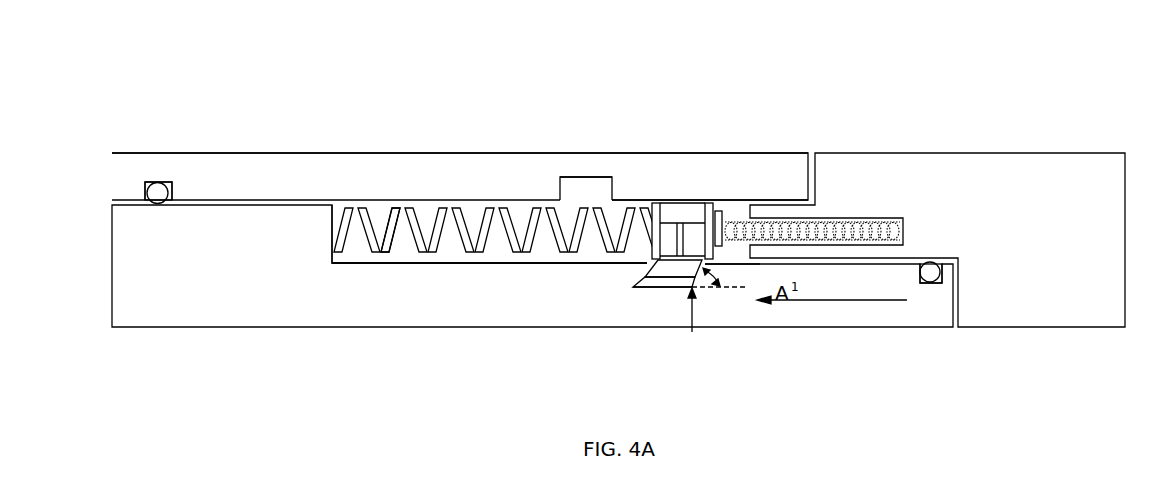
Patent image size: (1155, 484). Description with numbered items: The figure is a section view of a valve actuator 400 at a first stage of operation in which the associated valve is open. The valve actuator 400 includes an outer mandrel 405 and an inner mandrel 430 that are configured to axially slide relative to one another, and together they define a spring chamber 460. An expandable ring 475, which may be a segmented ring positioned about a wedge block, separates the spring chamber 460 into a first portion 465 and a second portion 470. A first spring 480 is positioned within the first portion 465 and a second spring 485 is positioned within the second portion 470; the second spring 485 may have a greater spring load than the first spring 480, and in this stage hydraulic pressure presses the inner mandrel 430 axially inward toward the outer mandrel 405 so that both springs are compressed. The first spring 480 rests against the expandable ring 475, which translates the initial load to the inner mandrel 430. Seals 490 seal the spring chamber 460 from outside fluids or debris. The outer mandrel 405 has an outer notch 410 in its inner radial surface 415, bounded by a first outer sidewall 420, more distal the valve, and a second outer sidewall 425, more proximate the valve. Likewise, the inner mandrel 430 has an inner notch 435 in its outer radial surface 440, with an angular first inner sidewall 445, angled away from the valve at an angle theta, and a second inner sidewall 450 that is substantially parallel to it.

The valve actuator 400 is at (250, 112).
The outer mandrel 405 is at (460, 176).
The outer notch 410 is at (577, 170).
The inner radial surface 415 is at (470, 202).
The first outer sidewall 420 is at (620, 185).
The second outer sidewall 425 is at (541, 187).
The inner mandrel 430 is at (532, 266).
The inner notch 435 is at (658, 292).
The outer radial surface 440 is at (721, 268).
The first inner sidewall 445 is at (697, 292).
The second inner sidewall 450 is at (637, 285).
The spring chamber 460 is at (505, 268).
The first portion 465 is at (738, 208).
The second portion 470 is at (400, 250).
The expandable ring 475 is at (683, 200).
The first spring 480 is at (850, 222).
The second spring 485 is at (408, 208).
The seals 490 is at (157, 182).